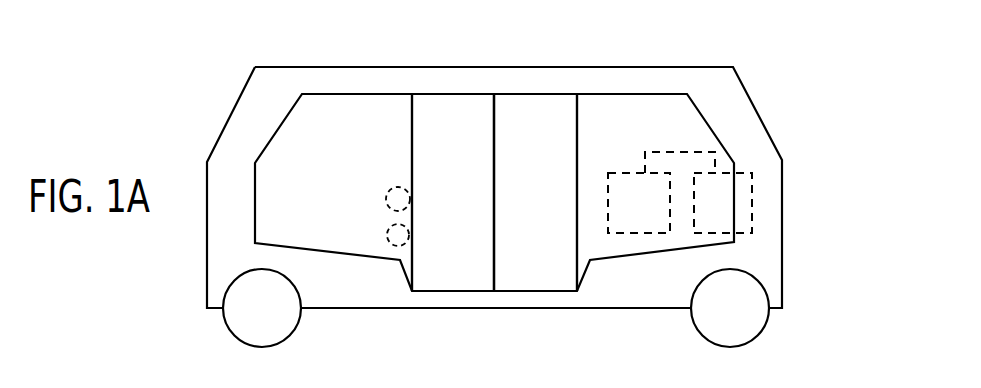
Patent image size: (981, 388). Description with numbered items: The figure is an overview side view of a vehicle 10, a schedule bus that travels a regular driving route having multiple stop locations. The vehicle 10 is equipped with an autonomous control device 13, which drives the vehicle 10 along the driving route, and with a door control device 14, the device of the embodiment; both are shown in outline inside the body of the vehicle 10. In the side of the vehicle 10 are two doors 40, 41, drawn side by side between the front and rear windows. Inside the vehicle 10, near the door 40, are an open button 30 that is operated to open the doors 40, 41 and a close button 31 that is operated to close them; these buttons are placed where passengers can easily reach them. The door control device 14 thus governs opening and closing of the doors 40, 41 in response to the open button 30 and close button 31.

The vehicle 10 is at (723, 66).
The autonomous control device 13 is at (632, 218).
The door control device 14 is at (743, 208).
The open button 30 is at (398, 187).
The close button 31 is at (384, 246).
The door 40 is at (460, 115).
The door 41 is at (550, 115).